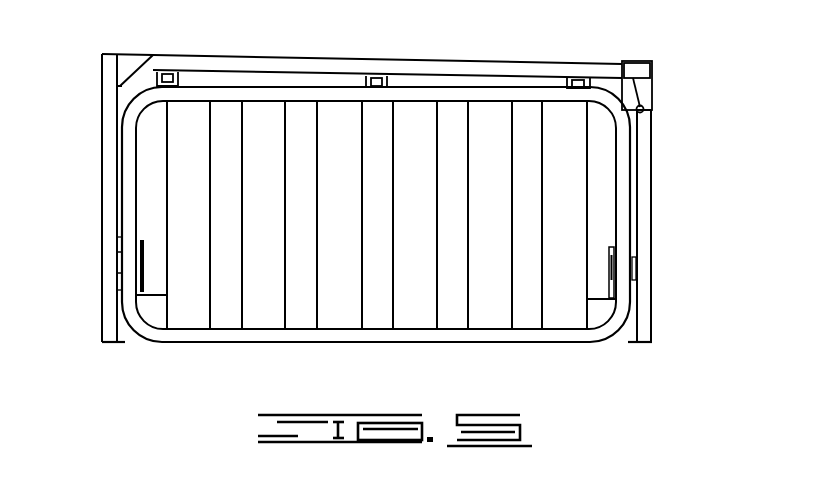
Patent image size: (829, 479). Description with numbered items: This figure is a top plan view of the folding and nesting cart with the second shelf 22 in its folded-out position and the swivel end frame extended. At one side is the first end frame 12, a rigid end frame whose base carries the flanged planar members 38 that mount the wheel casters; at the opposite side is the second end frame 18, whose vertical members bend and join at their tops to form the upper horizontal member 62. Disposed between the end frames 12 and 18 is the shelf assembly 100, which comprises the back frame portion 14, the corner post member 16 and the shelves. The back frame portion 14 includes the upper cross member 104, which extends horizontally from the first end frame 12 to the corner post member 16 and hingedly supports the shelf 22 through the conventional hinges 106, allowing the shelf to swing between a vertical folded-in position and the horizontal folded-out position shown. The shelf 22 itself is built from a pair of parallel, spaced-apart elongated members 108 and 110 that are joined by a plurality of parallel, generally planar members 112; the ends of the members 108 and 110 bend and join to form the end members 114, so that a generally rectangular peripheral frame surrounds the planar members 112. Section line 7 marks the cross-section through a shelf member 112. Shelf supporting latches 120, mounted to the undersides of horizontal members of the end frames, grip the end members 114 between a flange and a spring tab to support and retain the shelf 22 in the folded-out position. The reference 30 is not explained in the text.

The first end frame 12 is at (79, 198).
The back frame portion 14 is at (496, 56).
The corner post member 16 is at (662, 69).
The second end frame 18 is at (663, 169).
The second shelf 22 is at (399, 342).
The wall face 30 is at (107, 161).
The planar members 38 is at (146, 79).
The upper horizontal member 62 is at (643, 141).
The shelf assembly 100 is at (461, 47).
The upper cross member 104 is at (364, 62).
The hinge 106 is at (178, 82).
The elongated member 108 is at (345, 343).
The elongated member 110 is at (308, 95).
The planar members 112 is at (201, 177).
The end members 114 is at (130, 198).
The shelf supporting latch 120 is at (143, 240).
The section line 7- 7 is at (72, 292).